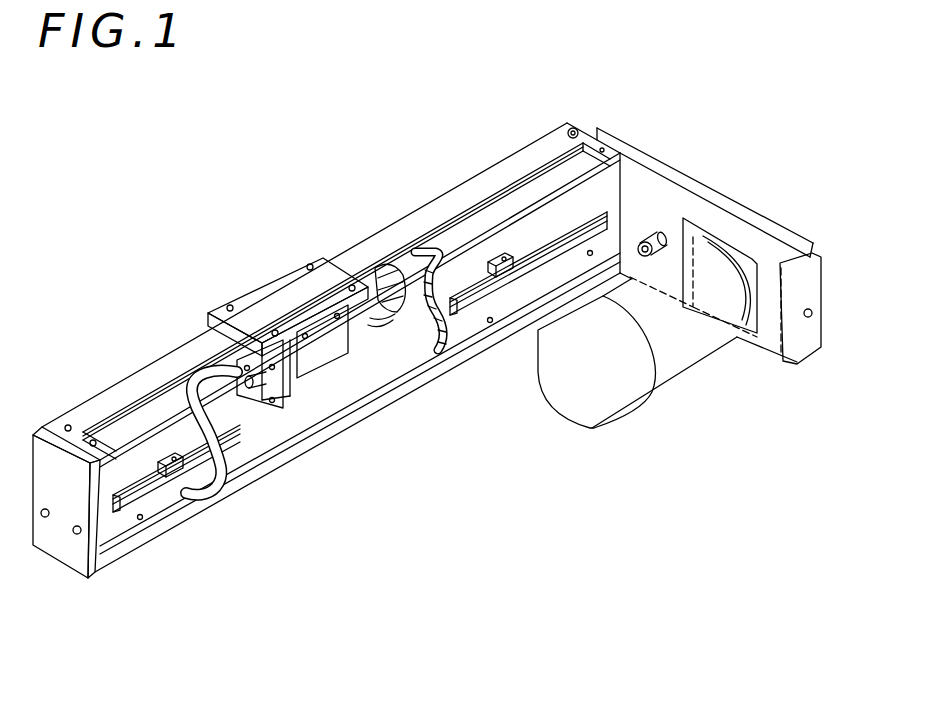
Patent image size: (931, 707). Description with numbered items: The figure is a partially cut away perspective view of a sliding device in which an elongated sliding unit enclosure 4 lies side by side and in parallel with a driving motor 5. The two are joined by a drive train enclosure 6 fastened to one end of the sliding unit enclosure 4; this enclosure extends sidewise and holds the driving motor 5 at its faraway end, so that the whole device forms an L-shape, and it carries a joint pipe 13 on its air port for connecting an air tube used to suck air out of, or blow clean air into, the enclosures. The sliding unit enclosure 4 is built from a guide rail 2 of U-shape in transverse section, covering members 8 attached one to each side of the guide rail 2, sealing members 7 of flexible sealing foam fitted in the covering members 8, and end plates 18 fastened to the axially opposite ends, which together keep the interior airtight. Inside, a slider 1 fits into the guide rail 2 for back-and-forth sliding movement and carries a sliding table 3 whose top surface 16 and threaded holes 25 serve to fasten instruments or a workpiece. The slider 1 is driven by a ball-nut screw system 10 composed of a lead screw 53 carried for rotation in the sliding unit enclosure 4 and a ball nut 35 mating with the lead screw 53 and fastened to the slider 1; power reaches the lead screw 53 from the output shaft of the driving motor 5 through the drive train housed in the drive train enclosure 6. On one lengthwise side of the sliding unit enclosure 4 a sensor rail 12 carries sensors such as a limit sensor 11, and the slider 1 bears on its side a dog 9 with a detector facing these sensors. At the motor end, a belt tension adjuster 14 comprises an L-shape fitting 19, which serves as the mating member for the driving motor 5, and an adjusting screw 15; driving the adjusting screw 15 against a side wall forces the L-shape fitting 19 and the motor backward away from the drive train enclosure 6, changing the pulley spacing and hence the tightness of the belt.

The slider 1 is at (292, 396).
The guide rail 2 is at (223, 497).
The sliding table 3 is at (270, 286).
The sliding unit enclosure 4 is at (115, 387).
The driving motor 5 is at (623, 397).
The drive train enclosure 6 is at (660, 174).
The sealing members 7 is at (380, 276).
The covering members 8 is at (457, 253).
The dog 9 is at (320, 356).
The ball-nut screw system 10 is at (370, 326).
The limit sensor 11 is at (500, 262).
The sensor rail 12 is at (552, 256).
The joint pipe 13 is at (654, 234).
The belt tension adjuster 14 is at (808, 283).
The adjusting screw 15 is at (806, 317).
The top surface 16 is at (294, 270).
The end plates 18 is at (55, 478).
The L-shape fitting 19 is at (772, 338).
The threaded holes 25 is at (227, 307).
The ball nut 35 is at (268, 402).
The lead screw 53 is at (376, 318).